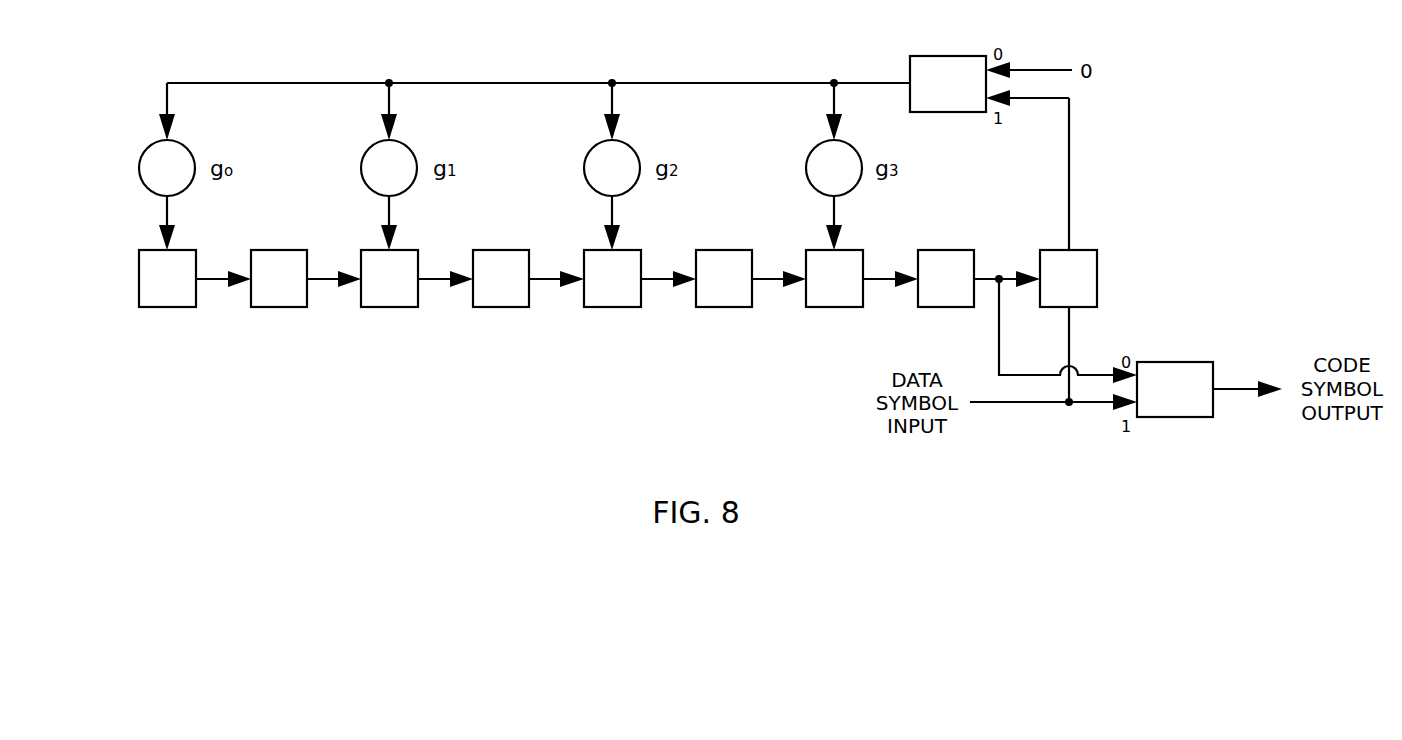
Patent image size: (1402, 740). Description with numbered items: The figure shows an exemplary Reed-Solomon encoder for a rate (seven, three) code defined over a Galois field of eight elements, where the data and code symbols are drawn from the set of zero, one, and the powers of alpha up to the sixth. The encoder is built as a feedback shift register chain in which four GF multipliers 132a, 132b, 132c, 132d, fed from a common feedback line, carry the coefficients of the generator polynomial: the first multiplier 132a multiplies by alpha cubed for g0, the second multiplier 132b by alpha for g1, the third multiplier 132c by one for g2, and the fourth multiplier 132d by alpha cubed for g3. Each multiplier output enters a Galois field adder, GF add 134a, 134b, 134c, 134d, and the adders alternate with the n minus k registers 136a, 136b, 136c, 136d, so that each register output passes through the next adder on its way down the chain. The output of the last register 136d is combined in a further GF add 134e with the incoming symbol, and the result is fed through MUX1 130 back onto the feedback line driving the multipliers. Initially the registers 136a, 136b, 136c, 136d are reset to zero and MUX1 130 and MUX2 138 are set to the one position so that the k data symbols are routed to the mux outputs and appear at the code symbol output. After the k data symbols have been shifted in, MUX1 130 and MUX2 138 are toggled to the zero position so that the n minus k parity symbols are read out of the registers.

The MUX1 130 is at (937, 56).
The GF multiplier 132a is at (139, 168).
The GF multiplier 132b is at (361, 168).
The GF multiplier 132c is at (584, 168).
The GF multiplier 132d is at (806, 168).
The GF add 134a is at (167, 307).
The GF add 134b is at (389, 307).
The GF add 134c is at (612, 307).
The GF add 134d is at (834, 307).
The GF add 134e is at (1097, 278).
The register 136a is at (279, 307).
The register 136b is at (501, 307).
The register 136c is at (724, 307).
The register 136d is at (944, 250).
The MUX2 138 is at (1172, 362).